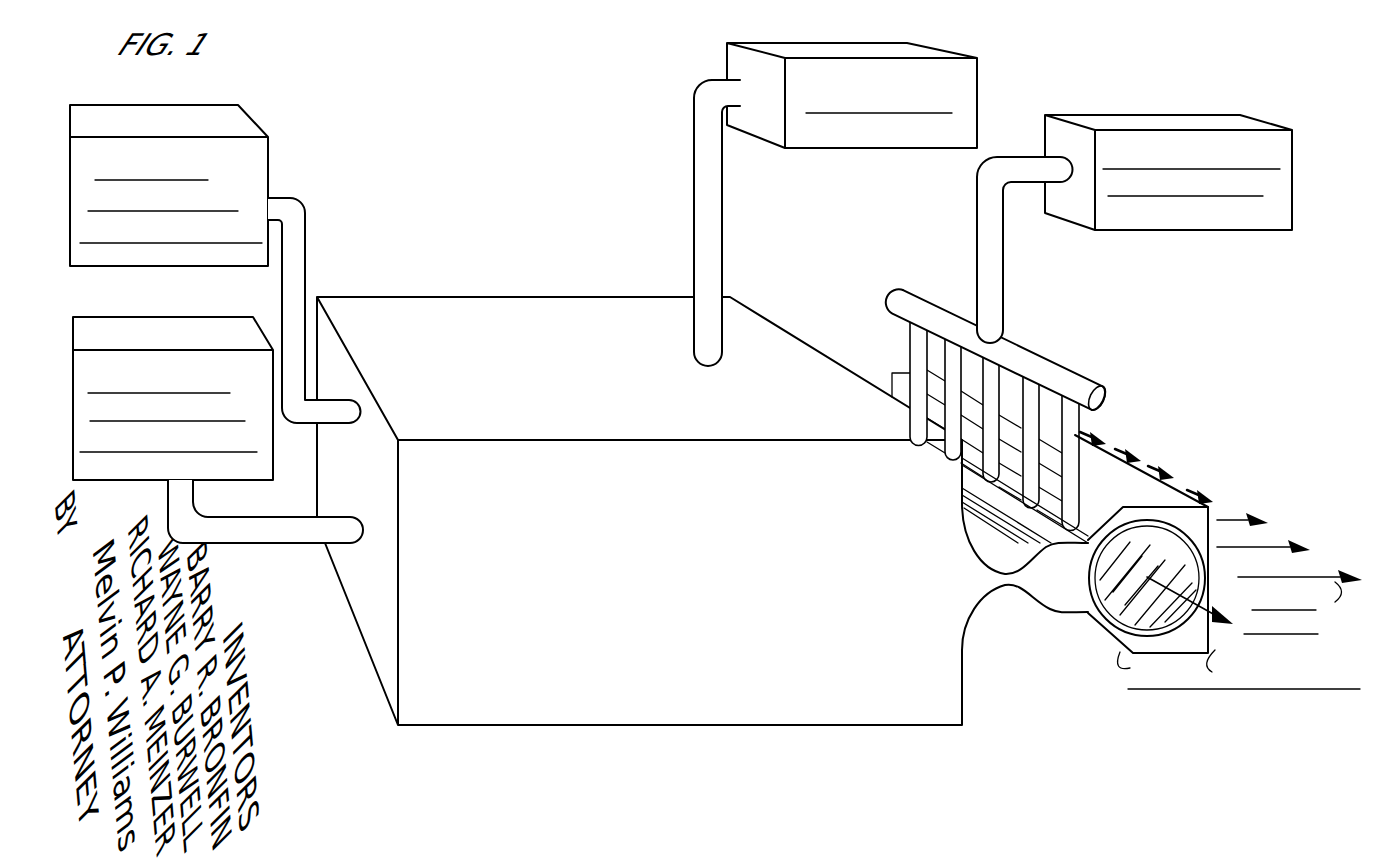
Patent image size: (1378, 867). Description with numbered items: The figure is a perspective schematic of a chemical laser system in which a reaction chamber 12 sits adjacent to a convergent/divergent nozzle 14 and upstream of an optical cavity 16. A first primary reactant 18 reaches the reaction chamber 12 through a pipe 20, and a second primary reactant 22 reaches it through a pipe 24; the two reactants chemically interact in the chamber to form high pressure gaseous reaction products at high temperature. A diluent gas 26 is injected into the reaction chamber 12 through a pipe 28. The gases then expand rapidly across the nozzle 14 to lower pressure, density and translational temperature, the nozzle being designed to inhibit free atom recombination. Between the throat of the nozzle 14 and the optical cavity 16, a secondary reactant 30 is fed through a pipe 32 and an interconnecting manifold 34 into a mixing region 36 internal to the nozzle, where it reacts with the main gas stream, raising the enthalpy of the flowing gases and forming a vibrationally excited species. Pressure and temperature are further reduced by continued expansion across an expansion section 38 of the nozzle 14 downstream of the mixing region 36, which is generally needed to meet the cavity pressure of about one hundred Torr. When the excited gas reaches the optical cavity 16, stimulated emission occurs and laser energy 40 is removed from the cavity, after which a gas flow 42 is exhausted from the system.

The reaction chamber 12 is at (495, 298).
The convergent/divergent nozzle 14 is at (1034, 614).
The optical cavity 16 is at (1105, 617).
The first primary reactant 18 is at (236, 106).
The pipe 20 is at (300, 239).
The second primary reactant 22 is at (183, 328).
The pipe 24 is at (243, 523).
The diluent gas 26 is at (857, 46).
The pipe 28 is at (694, 153).
The secondary reactant 30 is at (1155, 121).
The pipe 32 is at (1010, 160).
The interconnecting manifold 34 is at (1042, 366).
The mixing region 36 is at (1068, 563).
The expansion section 38 is at (1210, 507).
The laser energy 40 is at (1205, 628).
The gas flow 42 is at (1267, 547).